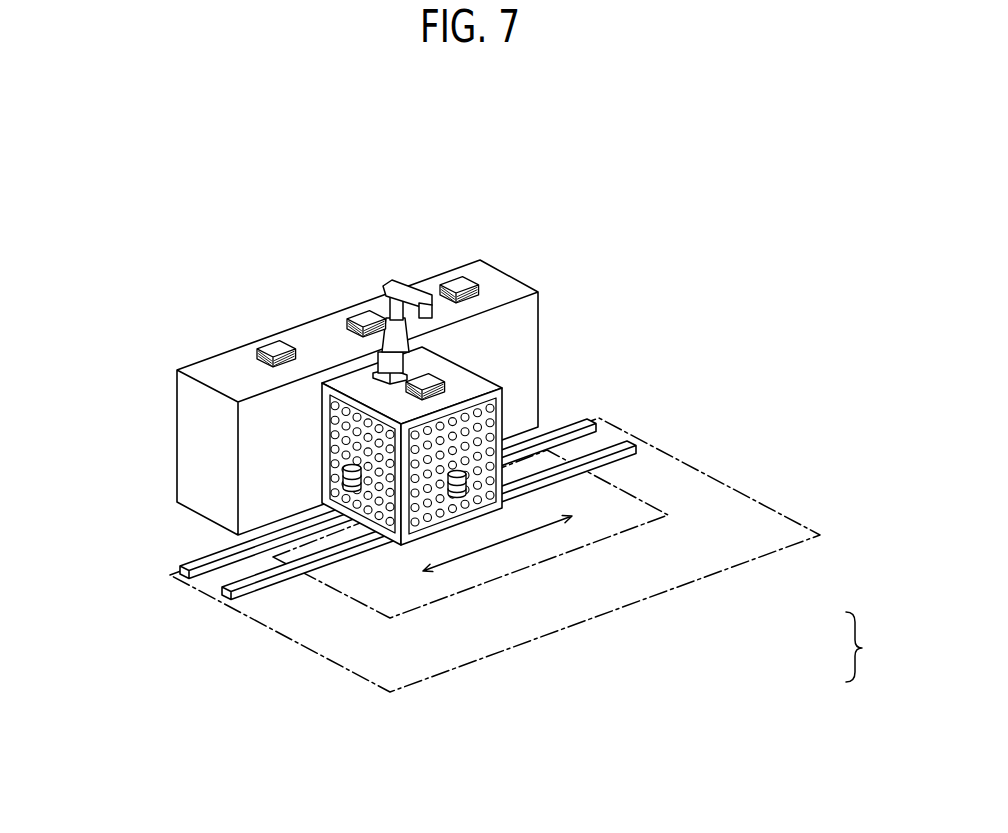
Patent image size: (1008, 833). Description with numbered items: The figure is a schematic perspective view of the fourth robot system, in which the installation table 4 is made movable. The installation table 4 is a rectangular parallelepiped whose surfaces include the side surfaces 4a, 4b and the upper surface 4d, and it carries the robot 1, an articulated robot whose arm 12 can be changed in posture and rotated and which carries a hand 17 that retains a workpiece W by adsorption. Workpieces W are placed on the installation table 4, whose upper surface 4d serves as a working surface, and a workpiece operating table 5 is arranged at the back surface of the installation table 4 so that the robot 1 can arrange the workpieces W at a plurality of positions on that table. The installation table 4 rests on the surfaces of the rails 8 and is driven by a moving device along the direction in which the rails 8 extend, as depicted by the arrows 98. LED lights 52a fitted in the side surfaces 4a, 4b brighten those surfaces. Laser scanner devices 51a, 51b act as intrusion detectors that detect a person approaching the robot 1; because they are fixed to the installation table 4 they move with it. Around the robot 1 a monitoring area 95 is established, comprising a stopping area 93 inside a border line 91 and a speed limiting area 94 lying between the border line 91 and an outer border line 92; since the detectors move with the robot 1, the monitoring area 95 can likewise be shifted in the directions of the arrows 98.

The robot 1 is at (361, 247).
The installation table 4 is at (426, 519).
The side surface 4a is at (325, 427).
The side surface 4b is at (490, 408).
The upper surface 4d is at (405, 352).
The workpiece operating table 5 is at (193, 477).
The rails 8 is at (180, 575).
The arm 12 is at (383, 300).
The hand 17 is at (425, 320).
The laser scanner device 51a is at (357, 500).
The laser scanner device 51b is at (468, 484).
The LED lights 52a is at (328, 450).
The border line 91 is at (538, 567).
The border line 92 is at (633, 605).
The stopping area 93 is at (559, 585).
The speed limiting area 94 is at (507, 563).
The monitoring area 95 is at (534, 569).
The arrows 98 is at (460, 556).
The workpiece W is at (276, 349).